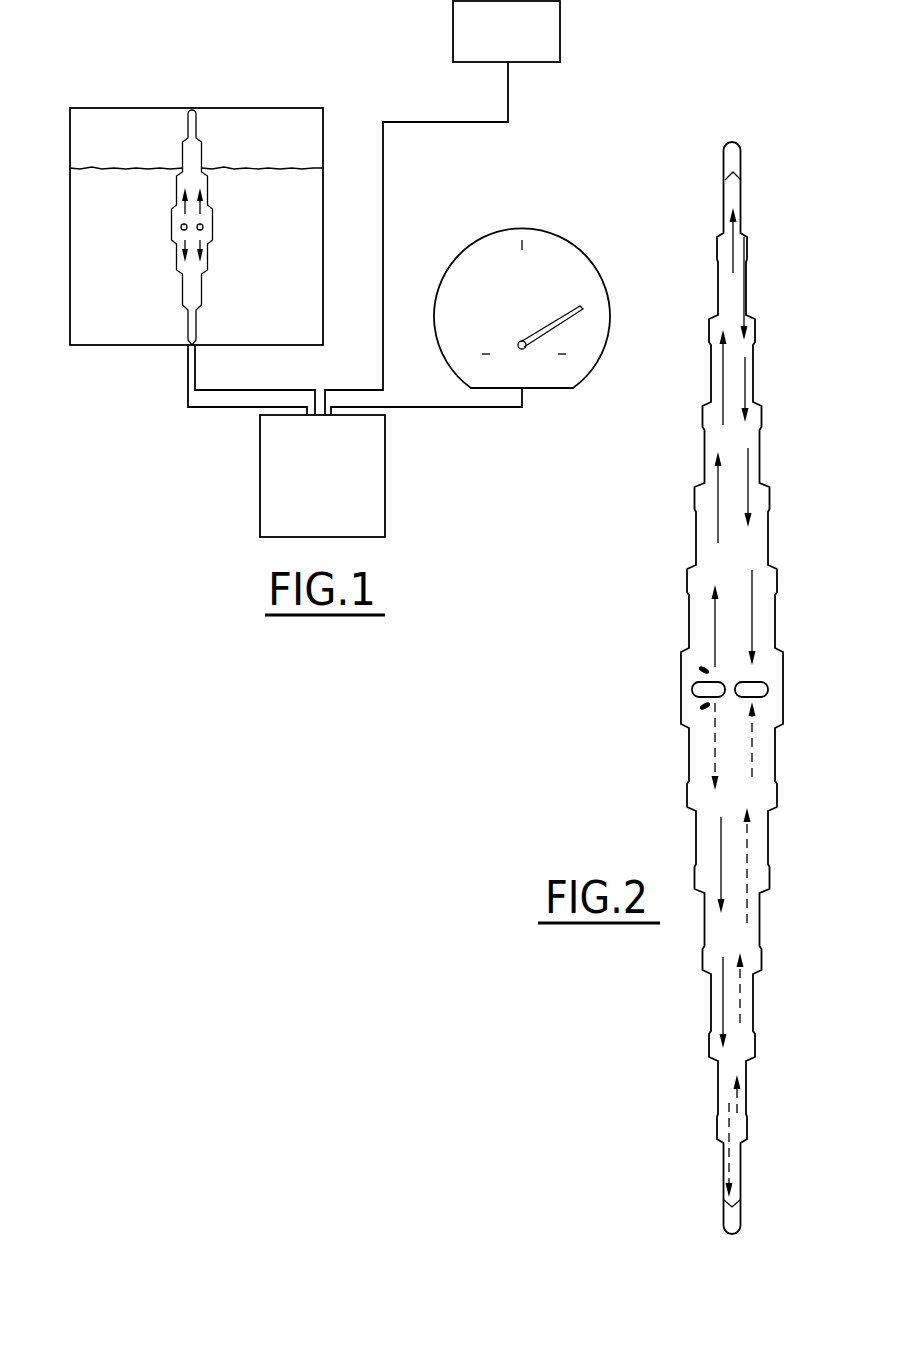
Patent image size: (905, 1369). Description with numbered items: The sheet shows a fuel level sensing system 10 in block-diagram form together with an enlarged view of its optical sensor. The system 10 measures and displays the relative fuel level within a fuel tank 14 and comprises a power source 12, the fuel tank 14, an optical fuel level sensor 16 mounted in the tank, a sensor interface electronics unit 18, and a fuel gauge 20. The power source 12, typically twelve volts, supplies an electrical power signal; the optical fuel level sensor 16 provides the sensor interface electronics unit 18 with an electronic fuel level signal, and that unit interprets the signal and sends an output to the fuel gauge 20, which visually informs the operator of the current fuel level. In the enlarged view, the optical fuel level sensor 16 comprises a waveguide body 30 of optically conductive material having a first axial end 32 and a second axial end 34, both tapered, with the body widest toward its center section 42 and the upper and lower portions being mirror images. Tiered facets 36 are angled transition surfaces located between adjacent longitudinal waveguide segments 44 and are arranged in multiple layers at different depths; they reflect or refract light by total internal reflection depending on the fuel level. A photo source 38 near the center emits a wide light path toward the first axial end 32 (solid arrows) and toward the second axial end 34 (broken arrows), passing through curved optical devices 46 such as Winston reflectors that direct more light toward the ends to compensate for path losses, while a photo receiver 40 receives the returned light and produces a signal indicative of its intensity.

In FIG. 1, the fuel level sensing system 10 is at (167, 65).
In FIG. 1, the power source 12 is at (560, 43).
In FIG. 1, the fuel tank 14 is at (323, 133).
In FIG. 1, the optical fuel level sensor 16 is at (214, 136).
In FIG. 2, the optical fuel level sensor 16 is at (776, 172).
In FIG. 1, the sensor interface electronics unit 18 is at (385, 485).
In FIG. 1, the fuel gauge 20 is at (562, 234).
In FIG. 2, the waveguide body 30 is at (735, 798).
In FIG. 2, the first axial end 32 is at (744, 137).
In FIG. 2, the second axial end 34 is at (708, 1231).
In FIG. 2, the tiered facets 36 is at (747, 232).
In FIG. 2, the photo source 38 is at (692, 688).
In FIG. 2, the photo receiver 40 is at (753, 680).
In FIG. 2, the center section 42 is at (655, 670).
In FIG. 2, the longitudinal waveguide segments 44 is at (710, 380).
In FIG. 2, the curved optical devices 46 is at (704, 668).